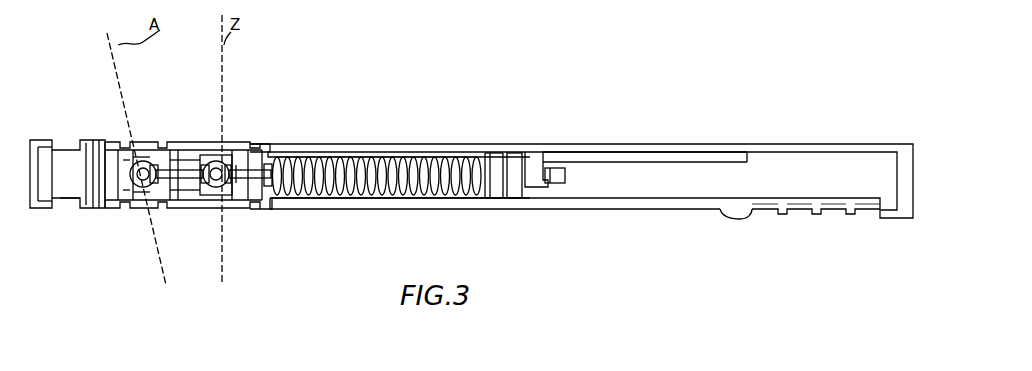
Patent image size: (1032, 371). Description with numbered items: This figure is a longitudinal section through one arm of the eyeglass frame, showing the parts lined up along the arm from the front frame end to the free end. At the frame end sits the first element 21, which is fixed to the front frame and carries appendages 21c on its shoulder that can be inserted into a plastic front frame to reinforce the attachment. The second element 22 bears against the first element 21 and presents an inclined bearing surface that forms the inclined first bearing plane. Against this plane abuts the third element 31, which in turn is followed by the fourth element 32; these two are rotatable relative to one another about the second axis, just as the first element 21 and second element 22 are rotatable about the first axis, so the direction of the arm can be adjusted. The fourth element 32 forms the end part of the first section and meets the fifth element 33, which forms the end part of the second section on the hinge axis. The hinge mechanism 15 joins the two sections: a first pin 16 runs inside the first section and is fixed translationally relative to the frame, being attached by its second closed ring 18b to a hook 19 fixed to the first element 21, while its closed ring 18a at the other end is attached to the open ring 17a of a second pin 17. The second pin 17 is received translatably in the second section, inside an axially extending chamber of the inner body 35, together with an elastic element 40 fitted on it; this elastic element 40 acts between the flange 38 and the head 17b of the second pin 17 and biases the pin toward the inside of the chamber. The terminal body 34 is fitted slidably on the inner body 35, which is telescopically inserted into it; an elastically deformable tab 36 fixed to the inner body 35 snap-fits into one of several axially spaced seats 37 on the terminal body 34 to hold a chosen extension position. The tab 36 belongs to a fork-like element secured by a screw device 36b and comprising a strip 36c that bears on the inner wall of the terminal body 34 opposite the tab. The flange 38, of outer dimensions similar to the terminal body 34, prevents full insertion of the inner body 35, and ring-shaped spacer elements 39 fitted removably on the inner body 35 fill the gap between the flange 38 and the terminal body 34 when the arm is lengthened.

The hinge mechanism 15 is at (194, 143).
The first pin 16 is at (206, 200).
The second pin 17 is at (278, 152).
The open ring 17a is at (236, 200).
The head 17b is at (494, 157).
The closed ring 18a is at (220, 200).
The second closed ring 18b is at (130, 146).
The hook 19 is at (124, 200).
The first element 21 is at (65, 140).
The appendages 21c is at (75, 205).
The second element 22 is at (97, 140).
The third element 31 is at (164, 143).
The fourth element 32 is at (185, 143).
The fifth element 33 is at (244, 148).
The terminal body 34 is at (833, 145).
The inner body 35 is at (383, 200).
The elastically deformable tab 36 is at (735, 217).
The screw device 36b is at (547, 165).
The strip 36c is at (684, 150).
The seats 37 is at (770, 216).
The flange 38 is at (264, 146).
The ring-shaped spacer elements 39 is at (304, 155).
The elastic element 40 is at (461, 157).